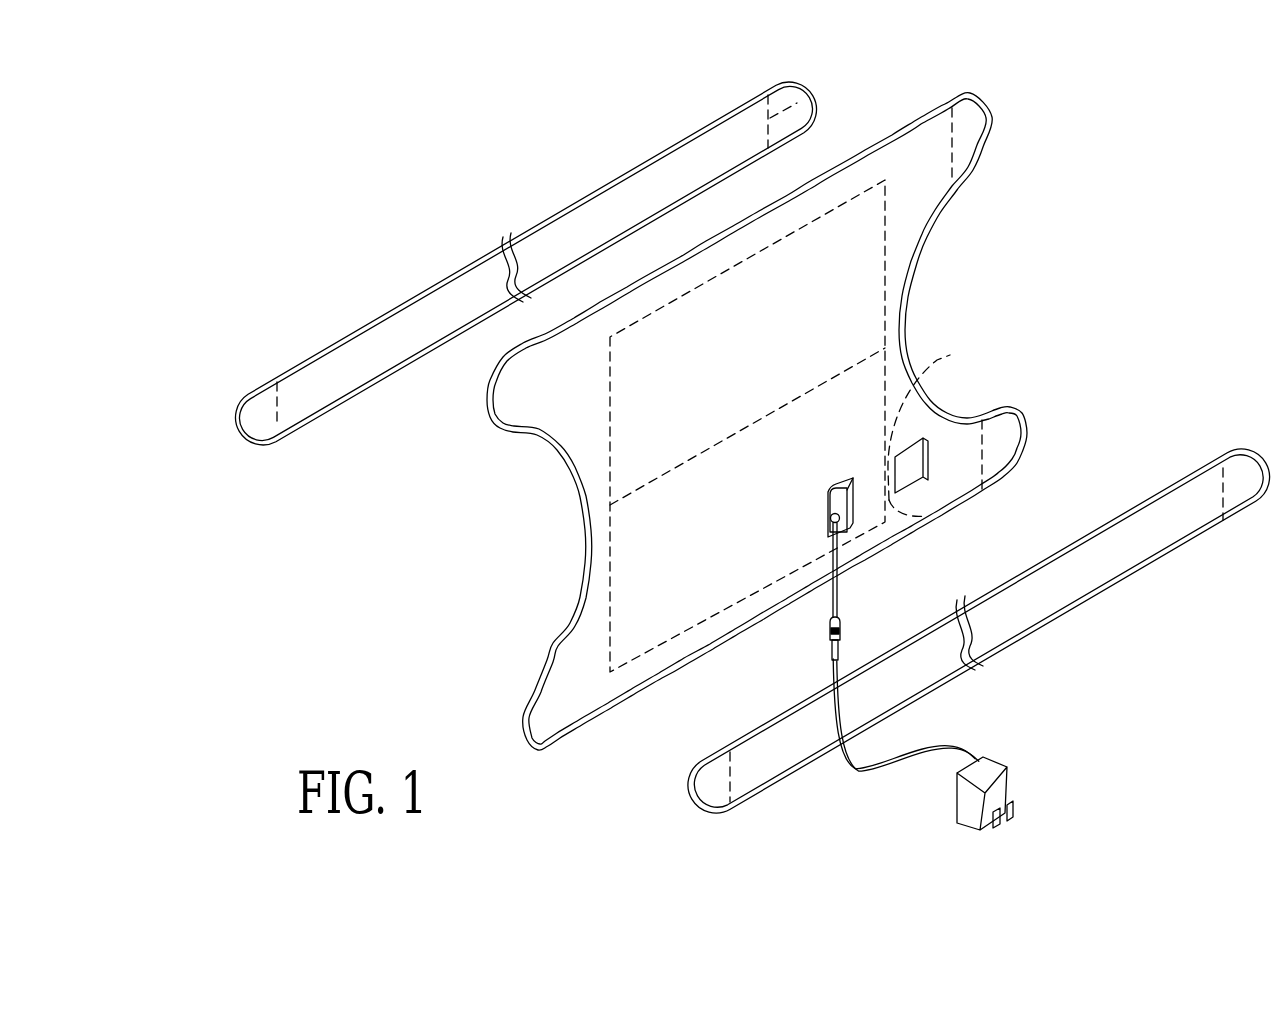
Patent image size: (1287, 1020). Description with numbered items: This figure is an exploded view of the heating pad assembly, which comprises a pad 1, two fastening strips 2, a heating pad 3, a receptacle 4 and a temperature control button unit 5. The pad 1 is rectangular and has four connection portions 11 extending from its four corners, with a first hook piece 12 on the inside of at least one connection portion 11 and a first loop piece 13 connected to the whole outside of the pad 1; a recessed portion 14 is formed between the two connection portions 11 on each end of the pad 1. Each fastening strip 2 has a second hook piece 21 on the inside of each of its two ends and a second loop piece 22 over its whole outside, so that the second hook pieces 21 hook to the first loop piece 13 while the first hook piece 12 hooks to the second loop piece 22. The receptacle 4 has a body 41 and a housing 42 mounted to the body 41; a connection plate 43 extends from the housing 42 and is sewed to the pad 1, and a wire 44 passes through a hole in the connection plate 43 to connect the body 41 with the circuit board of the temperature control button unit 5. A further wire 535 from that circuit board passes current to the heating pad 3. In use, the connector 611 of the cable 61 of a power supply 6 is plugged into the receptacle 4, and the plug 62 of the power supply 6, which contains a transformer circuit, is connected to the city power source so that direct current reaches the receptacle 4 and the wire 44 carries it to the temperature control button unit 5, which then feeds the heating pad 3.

The pad 1 is at (826, 183).
The connection portions 11 is at (503, 403).
The first hook piece 12 is at (980, 97).
The first loop piece 13 is at (660, 660).
The recessed portion 14 is at (916, 303).
The fastening strip 2 is at (563, 207).
The second hook piece 21 is at (817, 87).
The second loop piece 22 is at (387, 330).
The heating pad 3 is at (565, 470).
The receptacle 4 is at (818, 530).
The body 41 is at (840, 523).
The housing 42 is at (840, 528).
The connection plate 43 is at (850, 532).
The wire 44 is at (912, 485).
The temperature control button unit 5 is at (910, 470).
The wire 535 is at (950, 355).
The power supply 6 is at (924, 725).
The cable 61 is at (857, 770).
The connector 611 is at (830, 633).
The plug 62 is at (953, 778).